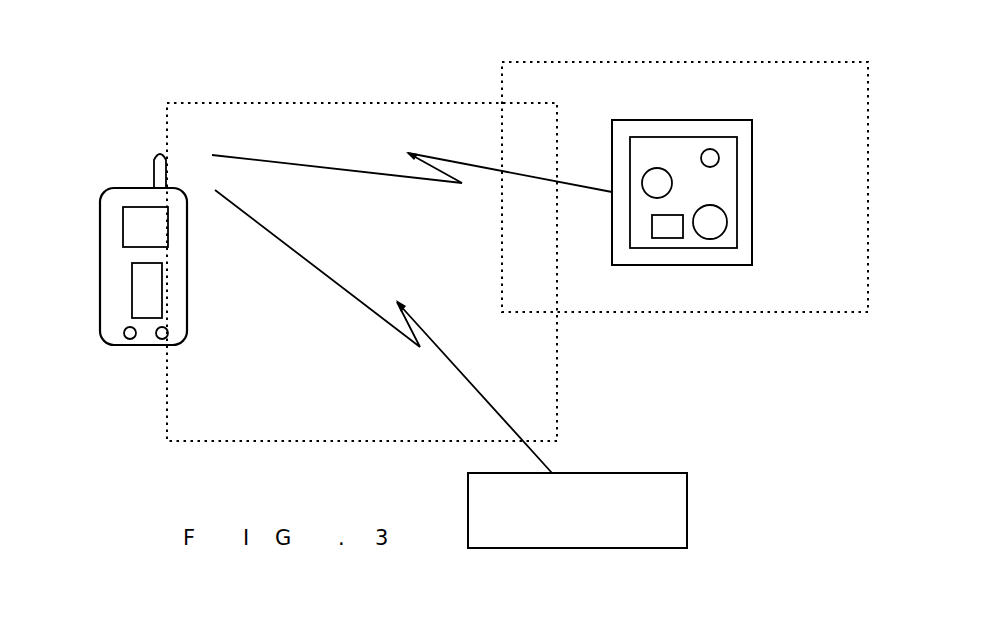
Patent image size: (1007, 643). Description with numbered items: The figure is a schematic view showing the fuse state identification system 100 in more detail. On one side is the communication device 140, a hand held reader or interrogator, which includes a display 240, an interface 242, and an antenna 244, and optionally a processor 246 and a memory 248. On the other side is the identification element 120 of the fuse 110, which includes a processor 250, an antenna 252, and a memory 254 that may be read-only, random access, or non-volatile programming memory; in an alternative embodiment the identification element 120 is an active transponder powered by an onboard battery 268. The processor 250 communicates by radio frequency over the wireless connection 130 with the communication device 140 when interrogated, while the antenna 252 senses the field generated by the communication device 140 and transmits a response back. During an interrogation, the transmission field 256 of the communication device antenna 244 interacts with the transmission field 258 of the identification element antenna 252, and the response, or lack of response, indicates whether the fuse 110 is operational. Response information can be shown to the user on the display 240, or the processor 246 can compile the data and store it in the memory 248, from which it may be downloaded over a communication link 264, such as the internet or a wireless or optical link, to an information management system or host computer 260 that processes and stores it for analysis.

The fuse state identification system 100 is at (312, 70).
The fuse 110 is at (752, 207).
The identification element 120 is at (670, 135).
The wireless connection 130 is at (370, 173).
The communication device 140 is at (157, 345).
The display 240 is at (143, 227).
The interface 242 is at (140, 283).
The antenna 244 is at (170, 165).
The processor 246 is at (128, 335).
The memory 248 is at (160, 338).
The processor 250 is at (652, 187).
The antenna 252 is at (708, 228).
The memory 254 is at (665, 235).
The transmission field 256 is at (433, 103).
The transmission field 258 is at (558, 62).
The information management system 260 is at (687, 527).
The communication link 264 is at (352, 297).
The battery 268 is at (718, 155).